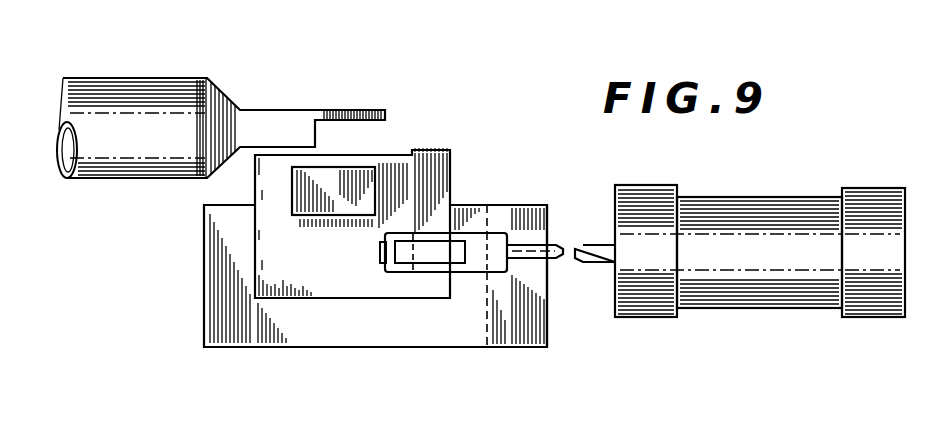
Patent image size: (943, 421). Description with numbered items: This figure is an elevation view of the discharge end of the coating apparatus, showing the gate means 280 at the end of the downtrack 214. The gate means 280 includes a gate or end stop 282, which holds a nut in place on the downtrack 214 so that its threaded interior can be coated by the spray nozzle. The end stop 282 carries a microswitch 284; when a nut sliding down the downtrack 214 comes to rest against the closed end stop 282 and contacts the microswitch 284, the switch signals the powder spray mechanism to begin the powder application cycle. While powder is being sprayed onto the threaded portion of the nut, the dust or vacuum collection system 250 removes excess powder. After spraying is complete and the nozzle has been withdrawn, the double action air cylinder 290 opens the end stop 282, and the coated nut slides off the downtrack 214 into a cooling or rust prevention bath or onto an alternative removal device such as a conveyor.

The dust or vacuum collection system 250 is at (168, 92).
The downtrack 214 is at (273, 253).
The microswitch 284 is at (350, 182).
The gate means 280 is at (491, 184).
The end stop 282 is at (495, 233).
The double action air cylinder 290 is at (742, 207).